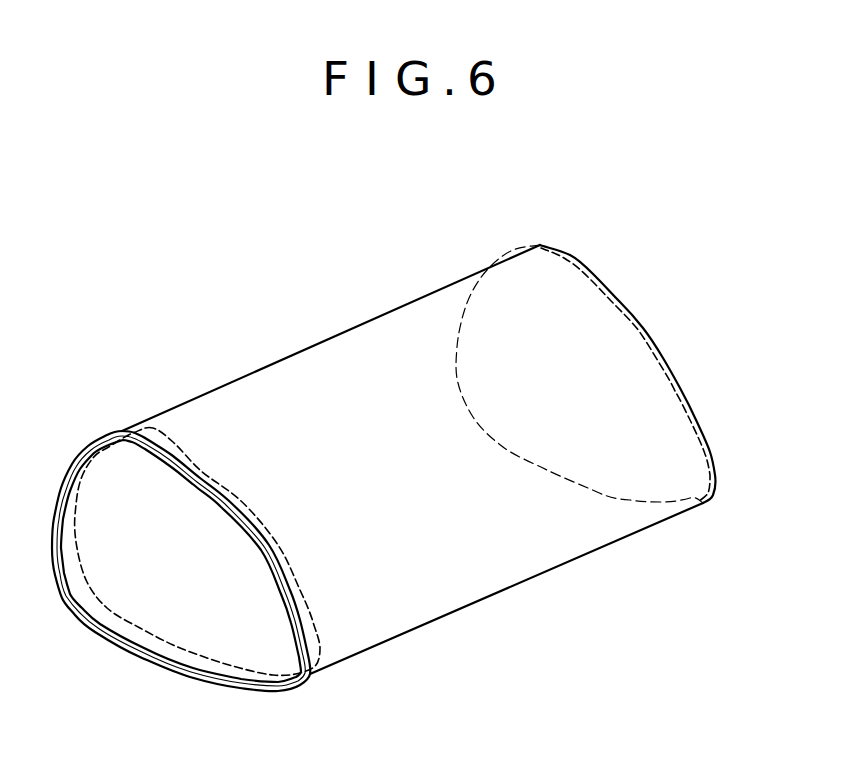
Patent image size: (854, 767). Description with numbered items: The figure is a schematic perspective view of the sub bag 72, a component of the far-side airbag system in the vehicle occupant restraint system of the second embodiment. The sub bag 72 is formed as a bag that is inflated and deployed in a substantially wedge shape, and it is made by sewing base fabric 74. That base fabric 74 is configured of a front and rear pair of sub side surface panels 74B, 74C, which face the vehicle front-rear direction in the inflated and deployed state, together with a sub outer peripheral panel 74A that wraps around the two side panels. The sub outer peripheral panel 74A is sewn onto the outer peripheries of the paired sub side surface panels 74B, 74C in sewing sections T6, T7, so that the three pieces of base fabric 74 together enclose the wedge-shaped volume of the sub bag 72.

The sub bag 72 is at (200, 350).
The base fabric 74 is at (482, 568).
The sub outer peripheral panel 74A is at (343, 370).
The sub side surface panel 74B is at (162, 592).
The sub side surface panel 74C is at (627, 408).
The sewing section T6 is at (273, 546).
The sewing section T7 is at (614, 298).